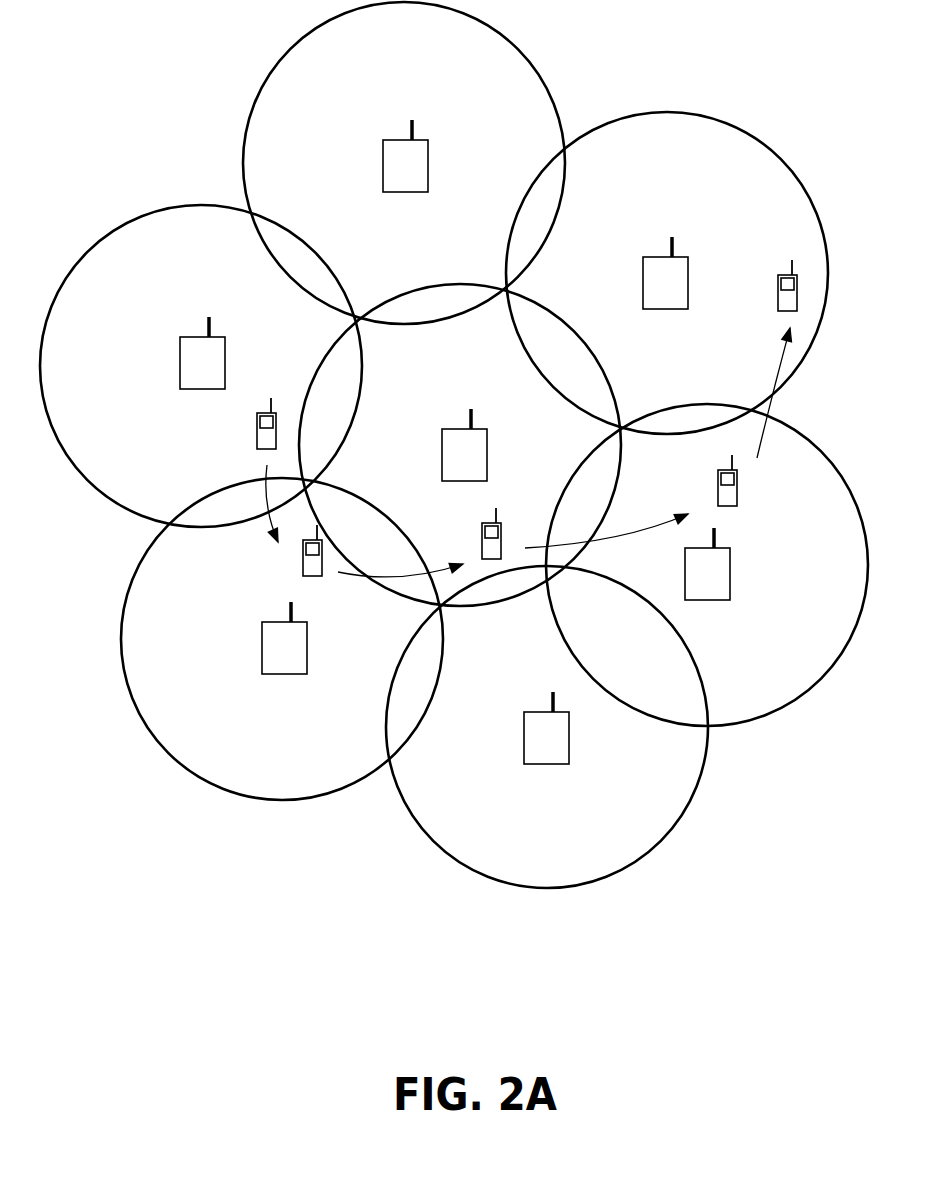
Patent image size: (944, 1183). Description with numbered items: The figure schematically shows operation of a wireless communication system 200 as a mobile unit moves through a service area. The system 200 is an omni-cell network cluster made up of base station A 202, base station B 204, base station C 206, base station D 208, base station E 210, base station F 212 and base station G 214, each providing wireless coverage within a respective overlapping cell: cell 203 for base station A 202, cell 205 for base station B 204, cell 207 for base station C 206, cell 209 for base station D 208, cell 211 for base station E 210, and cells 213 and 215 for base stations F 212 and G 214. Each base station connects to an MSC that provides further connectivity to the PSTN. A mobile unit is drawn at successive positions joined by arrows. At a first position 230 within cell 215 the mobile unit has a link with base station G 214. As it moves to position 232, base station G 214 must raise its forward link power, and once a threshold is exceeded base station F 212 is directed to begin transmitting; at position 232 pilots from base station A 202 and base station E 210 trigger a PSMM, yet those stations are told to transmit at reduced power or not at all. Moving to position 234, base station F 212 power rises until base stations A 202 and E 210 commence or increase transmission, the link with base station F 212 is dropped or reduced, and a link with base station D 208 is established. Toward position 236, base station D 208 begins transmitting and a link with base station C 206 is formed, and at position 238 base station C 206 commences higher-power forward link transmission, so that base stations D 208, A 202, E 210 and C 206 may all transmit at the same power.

The wireless communication system 200 is at (460, 523).
The base station A 202 is at (442, 448).
The cell 203 is at (428, 286).
The base station B 204 is at (383, 165).
The cell 205 is at (275, 70).
The base station C 206 is at (643, 270).
The cell 207 is at (688, 113).
The base station D 208 is at (730, 570).
The cell 209 is at (818, 448).
The base station E 210 is at (524, 735).
The cell 211 is at (683, 817).
The base station F 212 is at (262, 652).
The cell 213 is at (220, 788).
The base station G 214 is at (180, 365).
The cell 215 is at (128, 222).
The first position 230 is at (257, 443).
The position 232 is at (303, 570).
The position 234 is at (482, 548).
The position 236 is at (718, 497).
The position 238 is at (778, 300).